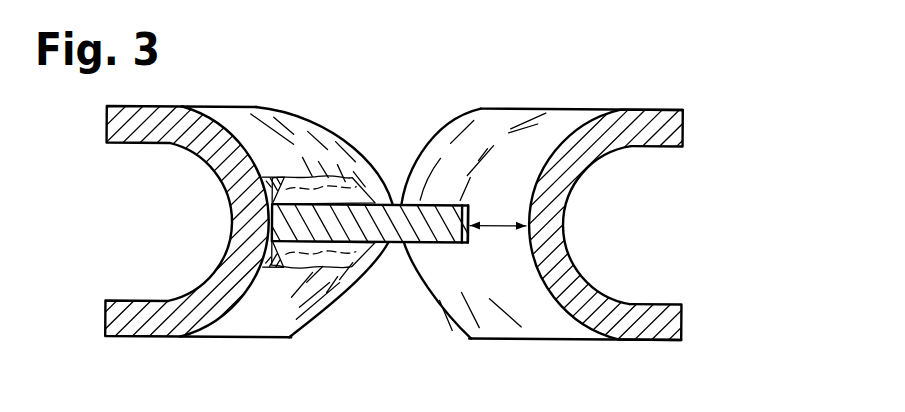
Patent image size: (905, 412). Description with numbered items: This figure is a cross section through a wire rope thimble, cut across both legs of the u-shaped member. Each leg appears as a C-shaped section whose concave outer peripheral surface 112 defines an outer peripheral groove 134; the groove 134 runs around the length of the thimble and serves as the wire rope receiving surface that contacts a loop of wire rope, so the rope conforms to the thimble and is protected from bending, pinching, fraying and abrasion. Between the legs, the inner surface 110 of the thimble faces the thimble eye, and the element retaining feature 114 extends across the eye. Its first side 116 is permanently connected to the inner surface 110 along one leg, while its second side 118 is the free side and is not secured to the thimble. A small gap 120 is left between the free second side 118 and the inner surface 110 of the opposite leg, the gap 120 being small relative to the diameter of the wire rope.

The inner surface 110 is at (564, 119).
The outer peripheral surface 112 is at (591, 224).
The element retaining feature 114 is at (412, 210).
The first side 116 is at (268, 216).
The second side 118 is at (474, 213).
The gap 120 is at (489, 229).
The outer peripheral groove 134 is at (582, 239).